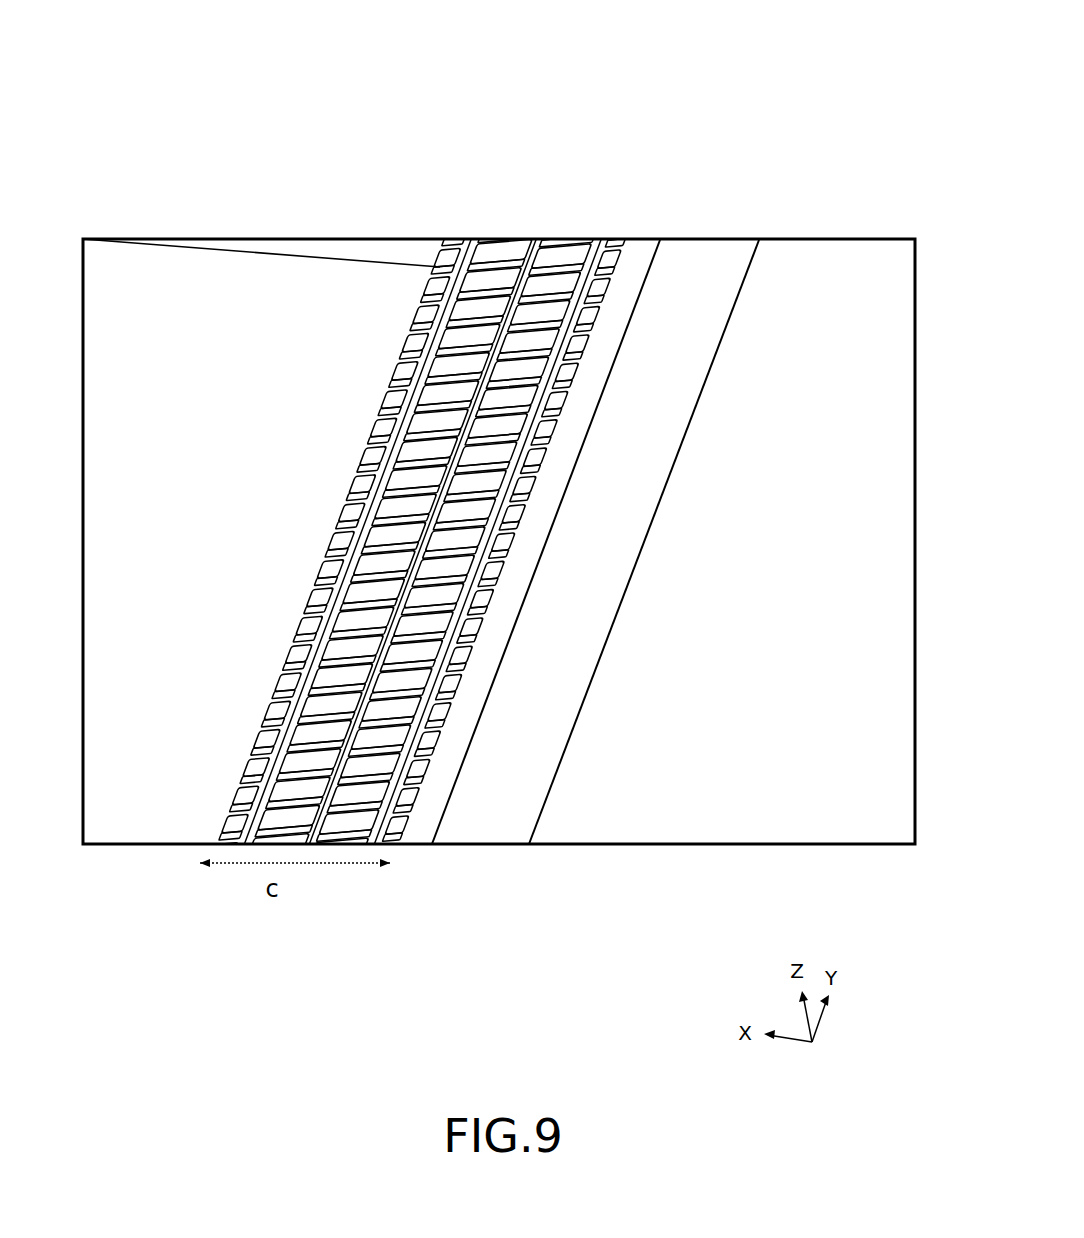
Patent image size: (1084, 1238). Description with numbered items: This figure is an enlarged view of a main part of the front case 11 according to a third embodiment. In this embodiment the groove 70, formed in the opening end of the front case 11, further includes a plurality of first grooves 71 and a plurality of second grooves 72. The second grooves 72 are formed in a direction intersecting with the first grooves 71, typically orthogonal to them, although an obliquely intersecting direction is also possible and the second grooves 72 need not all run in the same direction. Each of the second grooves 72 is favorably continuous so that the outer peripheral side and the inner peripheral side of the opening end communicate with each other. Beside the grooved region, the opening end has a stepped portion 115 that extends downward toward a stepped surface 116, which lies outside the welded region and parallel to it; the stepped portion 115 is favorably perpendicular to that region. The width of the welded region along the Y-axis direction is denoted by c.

The front case 11 is at (709, 205).
The groove 70 is at (448, 120).
The first grooves 71 is at (461, 240).
The second grooves 72 is at (329, 690).
The stepped portion 115 is at (510, 582).
The stepped surface 116 is at (555, 634).